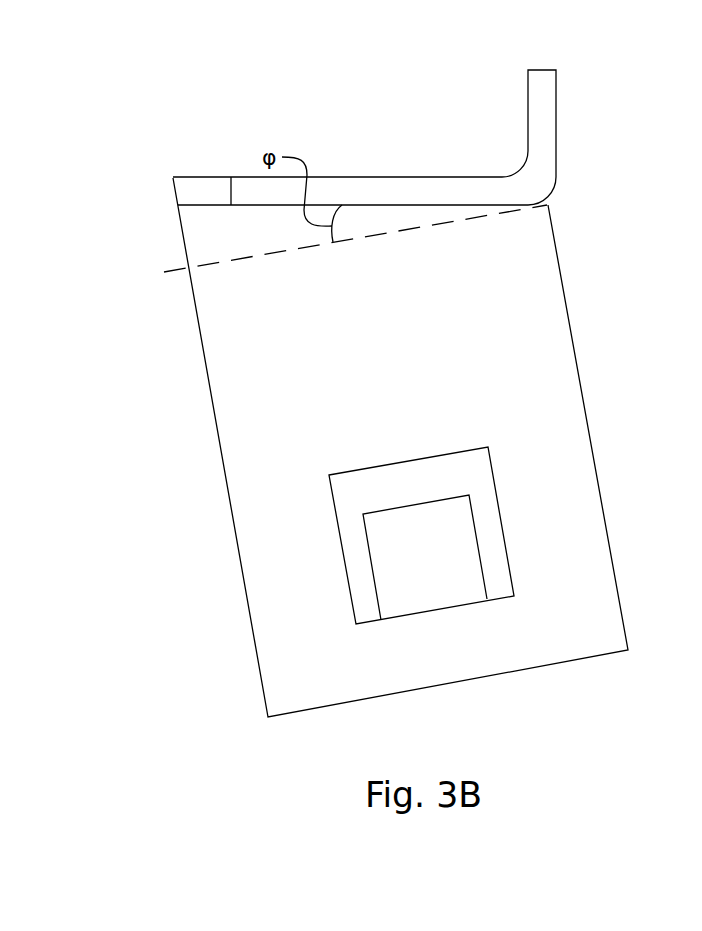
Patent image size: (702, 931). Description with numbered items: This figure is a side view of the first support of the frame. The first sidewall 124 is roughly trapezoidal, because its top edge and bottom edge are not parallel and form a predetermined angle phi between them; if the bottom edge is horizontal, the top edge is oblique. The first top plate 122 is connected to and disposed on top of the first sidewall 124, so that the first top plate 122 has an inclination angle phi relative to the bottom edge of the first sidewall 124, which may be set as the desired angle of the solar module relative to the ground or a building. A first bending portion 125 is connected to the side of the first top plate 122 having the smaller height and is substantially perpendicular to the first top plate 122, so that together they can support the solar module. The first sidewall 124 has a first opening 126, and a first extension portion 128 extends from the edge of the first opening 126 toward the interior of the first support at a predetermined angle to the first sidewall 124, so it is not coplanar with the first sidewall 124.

The first top plate 122 is at (342, 193).
The first sidewall 124 is at (225, 318).
The first bending portion 125 is at (557, 123).
The first opening 126 is at (478, 475).
The first extension portion 128 is at (420, 553).